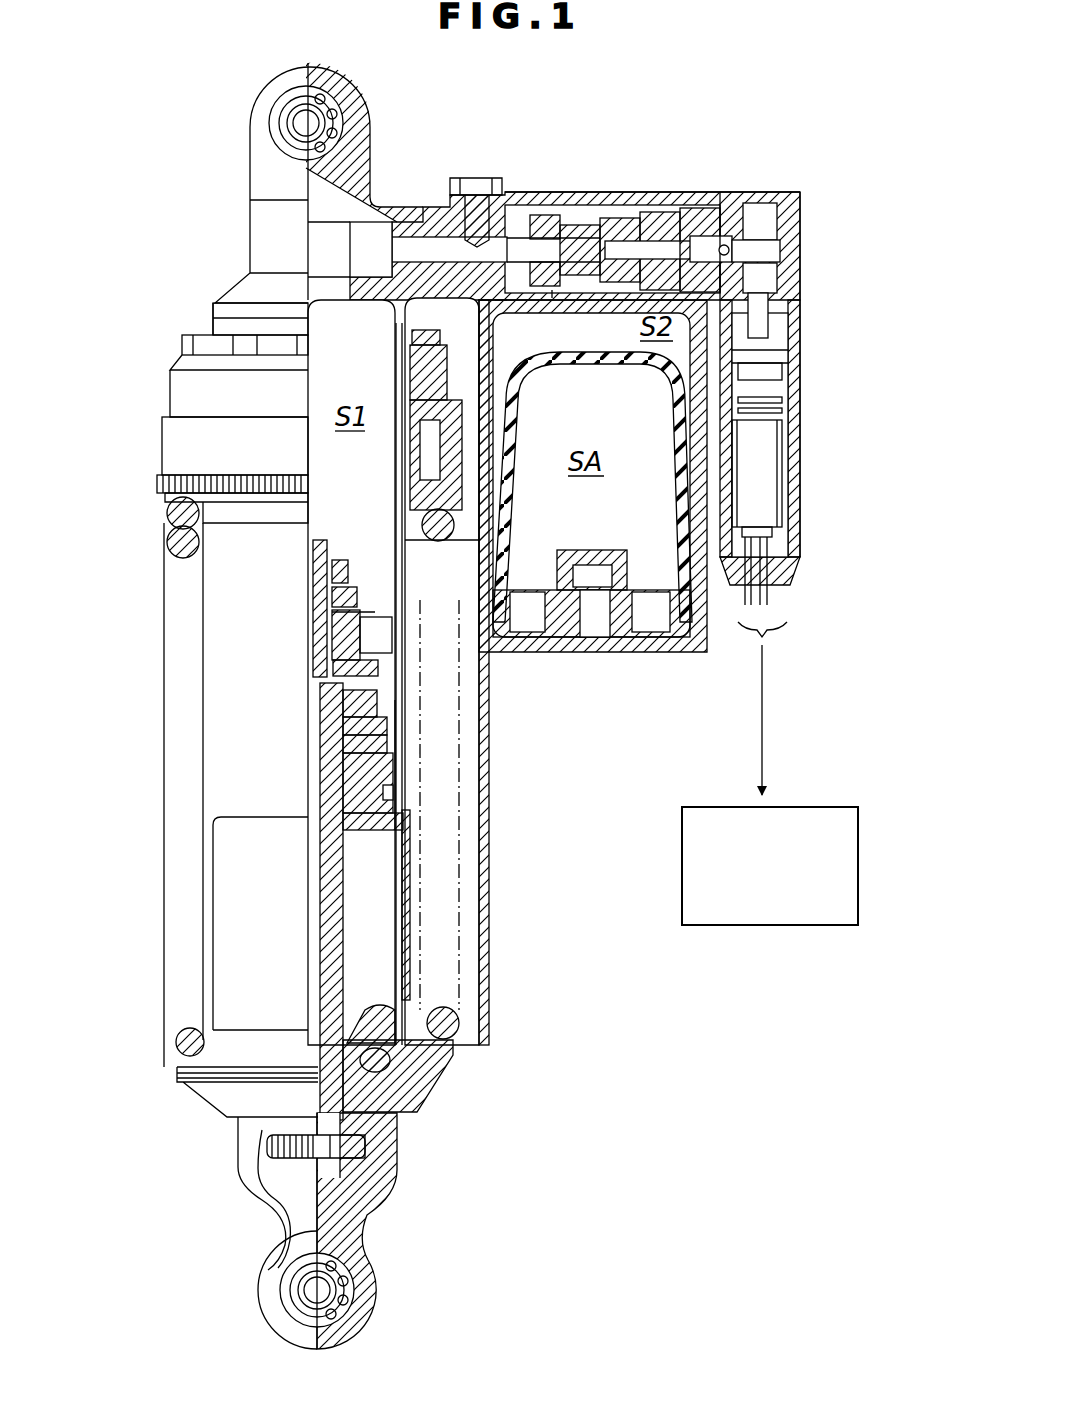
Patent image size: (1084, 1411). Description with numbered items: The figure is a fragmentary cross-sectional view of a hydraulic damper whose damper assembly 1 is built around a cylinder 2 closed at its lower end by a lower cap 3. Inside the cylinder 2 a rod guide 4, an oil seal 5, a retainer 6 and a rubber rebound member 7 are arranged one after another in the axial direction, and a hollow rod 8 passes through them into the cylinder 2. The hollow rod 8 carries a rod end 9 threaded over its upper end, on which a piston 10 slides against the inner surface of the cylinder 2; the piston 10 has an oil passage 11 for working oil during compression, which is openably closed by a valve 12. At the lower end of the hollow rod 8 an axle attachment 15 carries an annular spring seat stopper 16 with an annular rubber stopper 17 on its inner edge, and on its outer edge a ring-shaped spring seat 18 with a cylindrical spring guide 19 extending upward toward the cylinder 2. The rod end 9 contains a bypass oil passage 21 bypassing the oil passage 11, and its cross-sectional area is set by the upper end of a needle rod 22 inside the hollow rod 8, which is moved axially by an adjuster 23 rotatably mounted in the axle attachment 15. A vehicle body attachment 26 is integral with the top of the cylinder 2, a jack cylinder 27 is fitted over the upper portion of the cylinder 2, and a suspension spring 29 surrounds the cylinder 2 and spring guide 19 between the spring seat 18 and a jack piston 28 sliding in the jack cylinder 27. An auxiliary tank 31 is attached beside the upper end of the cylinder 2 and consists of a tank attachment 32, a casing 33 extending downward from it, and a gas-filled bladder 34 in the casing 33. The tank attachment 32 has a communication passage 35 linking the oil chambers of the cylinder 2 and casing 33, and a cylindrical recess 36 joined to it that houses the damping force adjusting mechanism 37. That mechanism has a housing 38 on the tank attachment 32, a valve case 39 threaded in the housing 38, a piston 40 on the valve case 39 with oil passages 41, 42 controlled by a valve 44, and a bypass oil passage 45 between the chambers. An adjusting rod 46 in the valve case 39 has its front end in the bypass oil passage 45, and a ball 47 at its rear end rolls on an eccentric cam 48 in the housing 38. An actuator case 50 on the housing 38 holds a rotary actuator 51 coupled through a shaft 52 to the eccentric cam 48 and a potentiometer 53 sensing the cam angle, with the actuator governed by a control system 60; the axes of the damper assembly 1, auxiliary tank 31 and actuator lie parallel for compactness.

The damper assembly 1 is at (128, 738).
The cylinder 2 is at (240, 683).
The lower cap 3 is at (380, 820).
The rod guide 4 is at (395, 787).
The oil seal 5 is at (400, 770).
The retainer 6 is at (400, 748).
The rubber rebound member 7 is at (395, 722).
The hollow rod 8 is at (337, 985).
The rod end 9 is at (350, 703).
The piston 10 is at (320, 612).
The oil passage 11 is at (375, 615).
The valve 12 is at (380, 667).
The axle attachment 15 is at (350, 1250).
The annular spring seat stopper 16 is at (420, 1090).
The annular rubber stopper 17 is at (410, 1040).
The ring-shaped spring seat 18 is at (443, 1063).
The cylindrical spring guide 19 is at (235, 935).
The bypass oil passage 21 is at (320, 655).
The needle rod 22 is at (313, 722).
The adjuster 23 is at (265, 1160).
The vehicle body attachment 26 is at (250, 186).
The jack cylinder 27 is at (165, 440).
The jack piston 28 is at (170, 505).
The suspension spring 29 is at (180, 880).
The auxiliary tank 31 is at (640, 652).
The tank attachment 32 is at (622, 195).
The casing 33 is at (715, 652).
The bladder 34 is at (690, 528).
The communication passage 35 is at (430, 245).
The cylindrical recess 36 is at (520, 215).
The damping force adjusting mechanism 37 is at (812, 136).
The housing 38 is at (738, 195).
The valve case 39 is at (665, 230).
The piston 40 is at (562, 215).
The oil passage 41 is at (590, 237).
The oil passage 42 is at (560, 290).
The valve 44 is at (513, 326).
The bypass oil passage 45 is at (530, 230).
The adjusting rod 46 is at (700, 230).
The ball 47 is at (792, 232).
The eccentric cam 48 is at (785, 255).
The actuator case 50 is at (790, 532).
The rotary actuator 51 is at (765, 460).
The shaft 52 is at (780, 280).
The potentiometer 53 is at (778, 342).
The control system 60 is at (860, 868).